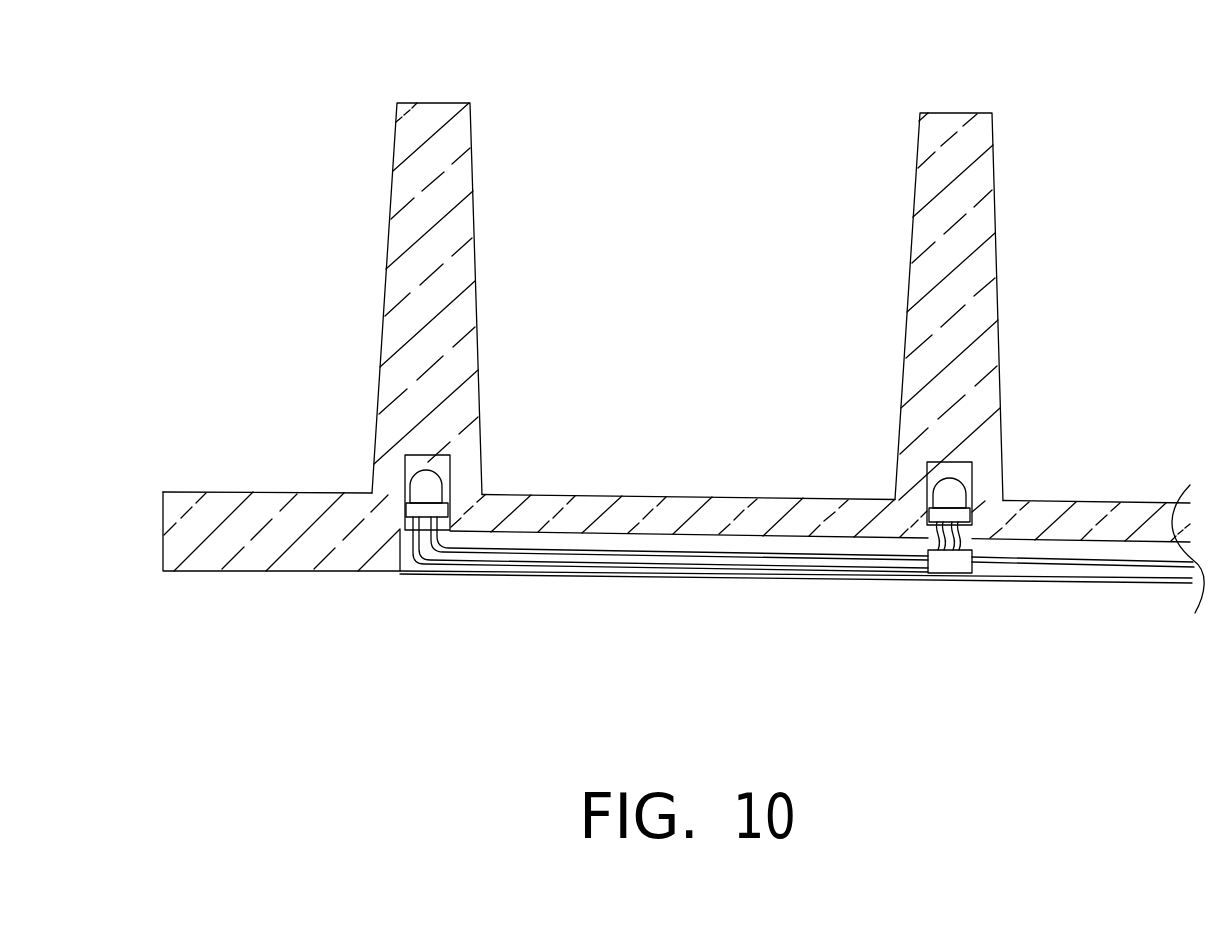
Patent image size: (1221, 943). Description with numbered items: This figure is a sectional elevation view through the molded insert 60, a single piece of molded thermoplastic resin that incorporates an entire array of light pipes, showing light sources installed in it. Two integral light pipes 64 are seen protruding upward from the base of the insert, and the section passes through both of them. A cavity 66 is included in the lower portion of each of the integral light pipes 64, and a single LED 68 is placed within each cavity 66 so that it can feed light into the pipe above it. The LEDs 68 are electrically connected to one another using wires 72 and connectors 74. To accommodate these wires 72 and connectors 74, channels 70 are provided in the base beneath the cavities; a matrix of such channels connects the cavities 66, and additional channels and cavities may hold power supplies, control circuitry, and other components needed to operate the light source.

The molded insert 60 is at (320, 217).
The integral light pipes 64 is at (993, 160).
The cavity 66 is at (450, 457).
The LED 68 is at (427, 484).
The channels 70 is at (410, 561).
The wires 72 is at (737, 556).
The connectors 74 is at (947, 562).